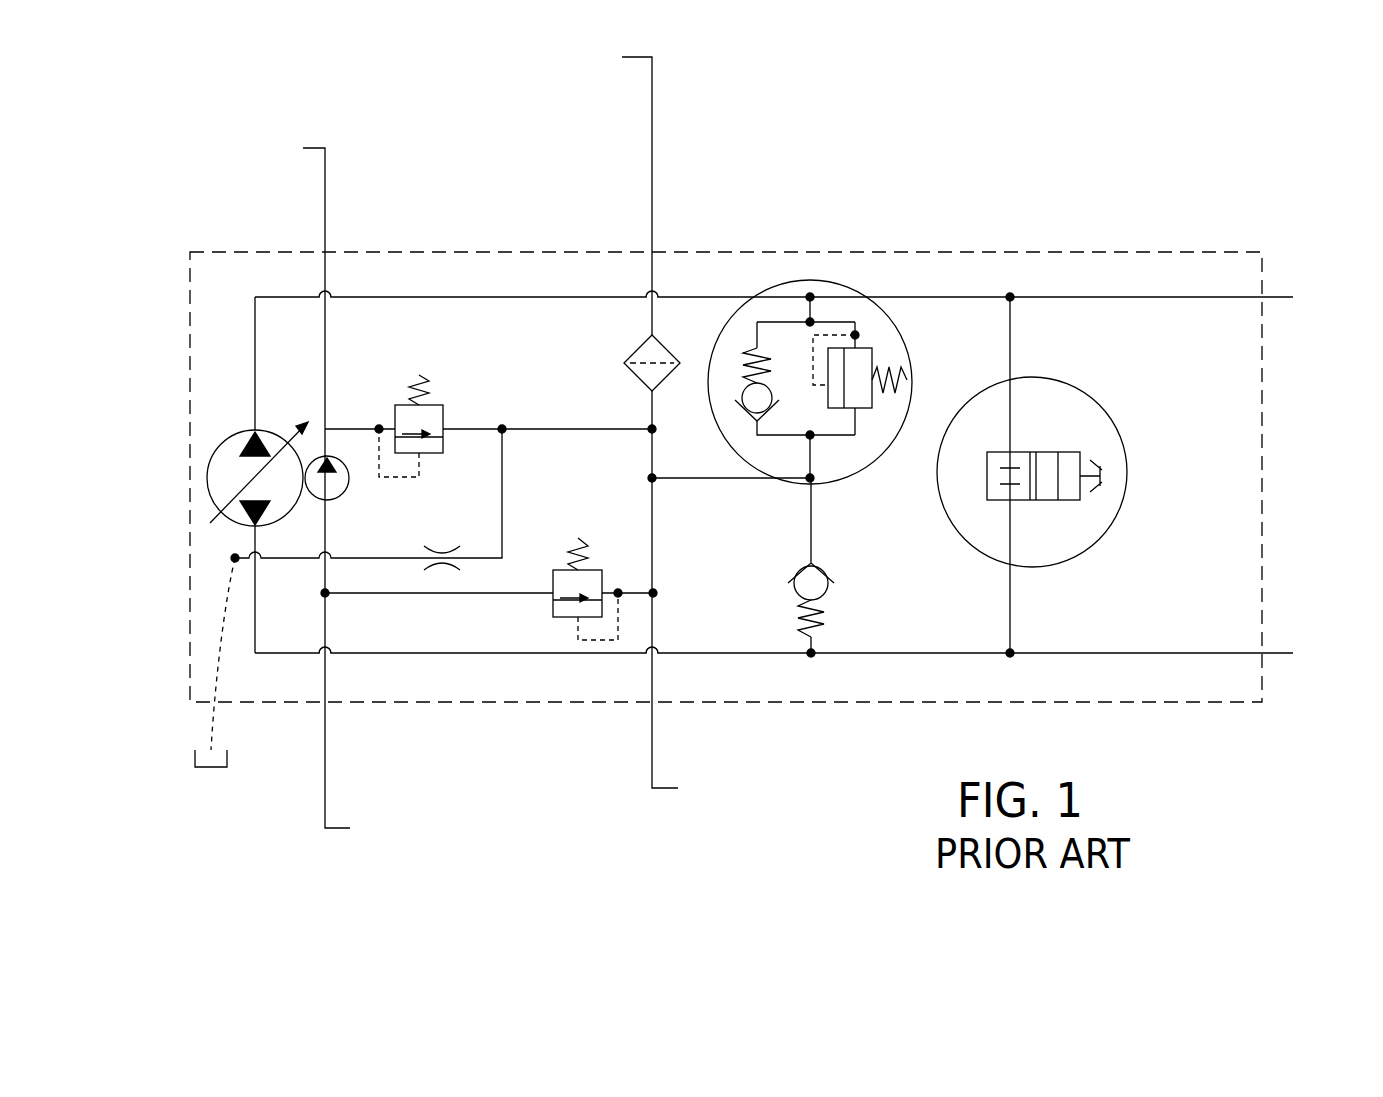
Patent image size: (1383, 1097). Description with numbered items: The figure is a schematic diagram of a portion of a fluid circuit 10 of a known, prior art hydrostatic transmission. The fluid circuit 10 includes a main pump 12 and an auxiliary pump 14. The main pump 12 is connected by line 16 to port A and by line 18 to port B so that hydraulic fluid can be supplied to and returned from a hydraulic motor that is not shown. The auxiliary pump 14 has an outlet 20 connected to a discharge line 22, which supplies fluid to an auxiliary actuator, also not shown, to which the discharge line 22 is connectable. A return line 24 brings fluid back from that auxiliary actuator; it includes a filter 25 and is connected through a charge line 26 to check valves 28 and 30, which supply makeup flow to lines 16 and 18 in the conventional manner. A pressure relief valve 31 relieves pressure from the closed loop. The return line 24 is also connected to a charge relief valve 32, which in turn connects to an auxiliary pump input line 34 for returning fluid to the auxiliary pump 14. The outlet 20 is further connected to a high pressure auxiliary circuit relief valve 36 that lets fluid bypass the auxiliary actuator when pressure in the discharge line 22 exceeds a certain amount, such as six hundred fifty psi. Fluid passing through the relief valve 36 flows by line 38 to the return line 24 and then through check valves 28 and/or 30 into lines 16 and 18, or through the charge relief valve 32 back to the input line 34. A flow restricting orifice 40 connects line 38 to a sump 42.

The fluid circuit 10 is at (1277, 155).
The main pump 12 is at (230, 462).
The auxiliary pump 14 is at (337, 478).
The line 16 is at (1248, 297).
The line 18 is at (1133, 653).
The outlet 20 is at (323, 455).
The discharge line 22 is at (325, 203).
The return line 24 is at (652, 172).
The filter 25 is at (632, 352).
The charge line 26 is at (725, 478).
The check valve 28 is at (745, 375).
The check valve 30 is at (823, 592).
The pressure relief valve 31 is at (858, 350).
The charge relief valve 32 is at (567, 617).
The auxiliary pump input line 34 is at (330, 770).
The high pressure auxiliary circuit relief valve 36 is at (445, 428).
The line 38 is at (552, 429).
The flow restricting orifice 40 is at (440, 570).
The sump 42 is at (215, 767).